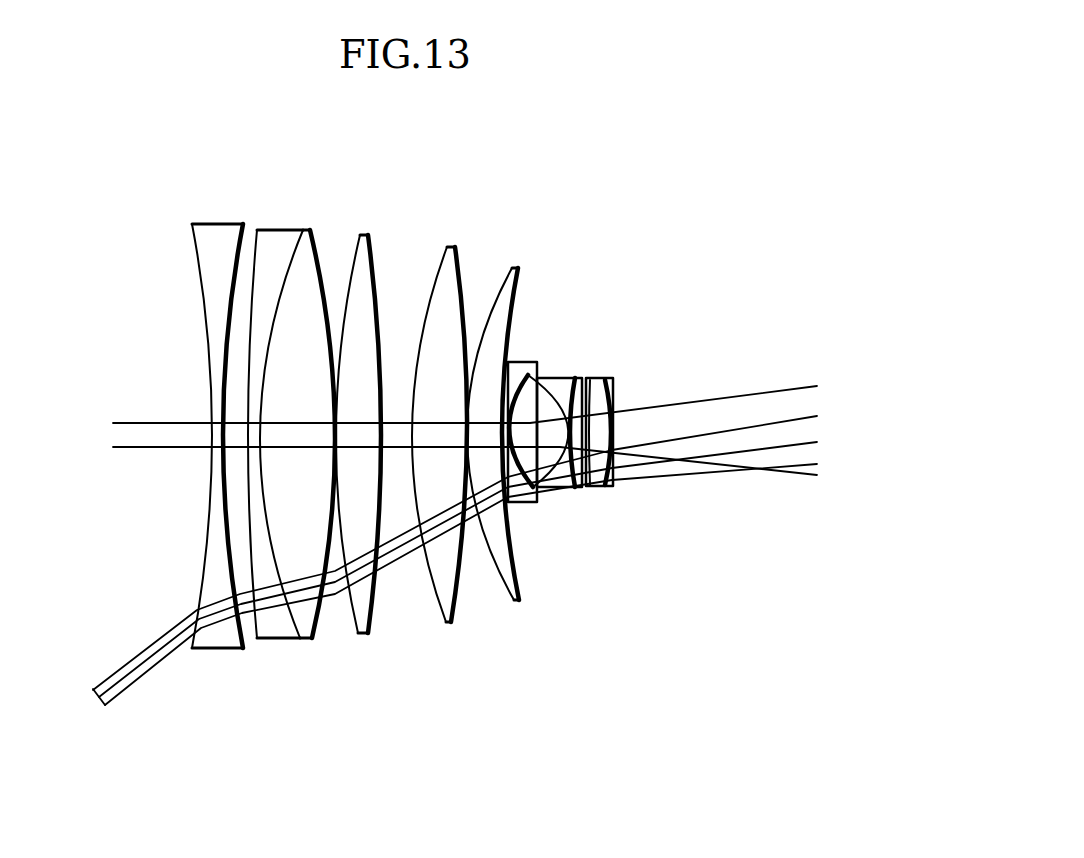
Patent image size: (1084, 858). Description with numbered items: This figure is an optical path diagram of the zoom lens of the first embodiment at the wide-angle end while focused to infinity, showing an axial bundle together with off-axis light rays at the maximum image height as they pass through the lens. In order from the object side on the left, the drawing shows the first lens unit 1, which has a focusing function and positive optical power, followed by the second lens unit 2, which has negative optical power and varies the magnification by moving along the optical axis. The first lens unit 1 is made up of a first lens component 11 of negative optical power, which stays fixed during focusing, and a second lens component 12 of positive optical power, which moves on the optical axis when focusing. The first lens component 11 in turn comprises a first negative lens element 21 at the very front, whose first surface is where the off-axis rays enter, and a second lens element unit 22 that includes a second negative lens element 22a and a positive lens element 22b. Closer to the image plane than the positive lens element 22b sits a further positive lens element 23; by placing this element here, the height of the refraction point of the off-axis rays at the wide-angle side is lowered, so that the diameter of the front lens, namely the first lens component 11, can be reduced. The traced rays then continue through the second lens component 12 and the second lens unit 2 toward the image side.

The first lens unit 1 is at (502, 740).
The second lens unit 2 is at (507, 638).
The first lens component 11 is at (187, 187).
The second lens component 12 is at (430, 220).
The first negative lens element 21 is at (200, 246).
The second lens element unit 22 is at (276, 236).
The second negative lens element 22a is at (278, 640).
The positive lens element 22b is at (312, 625).
The positive lens element 23 is at (366, 237).